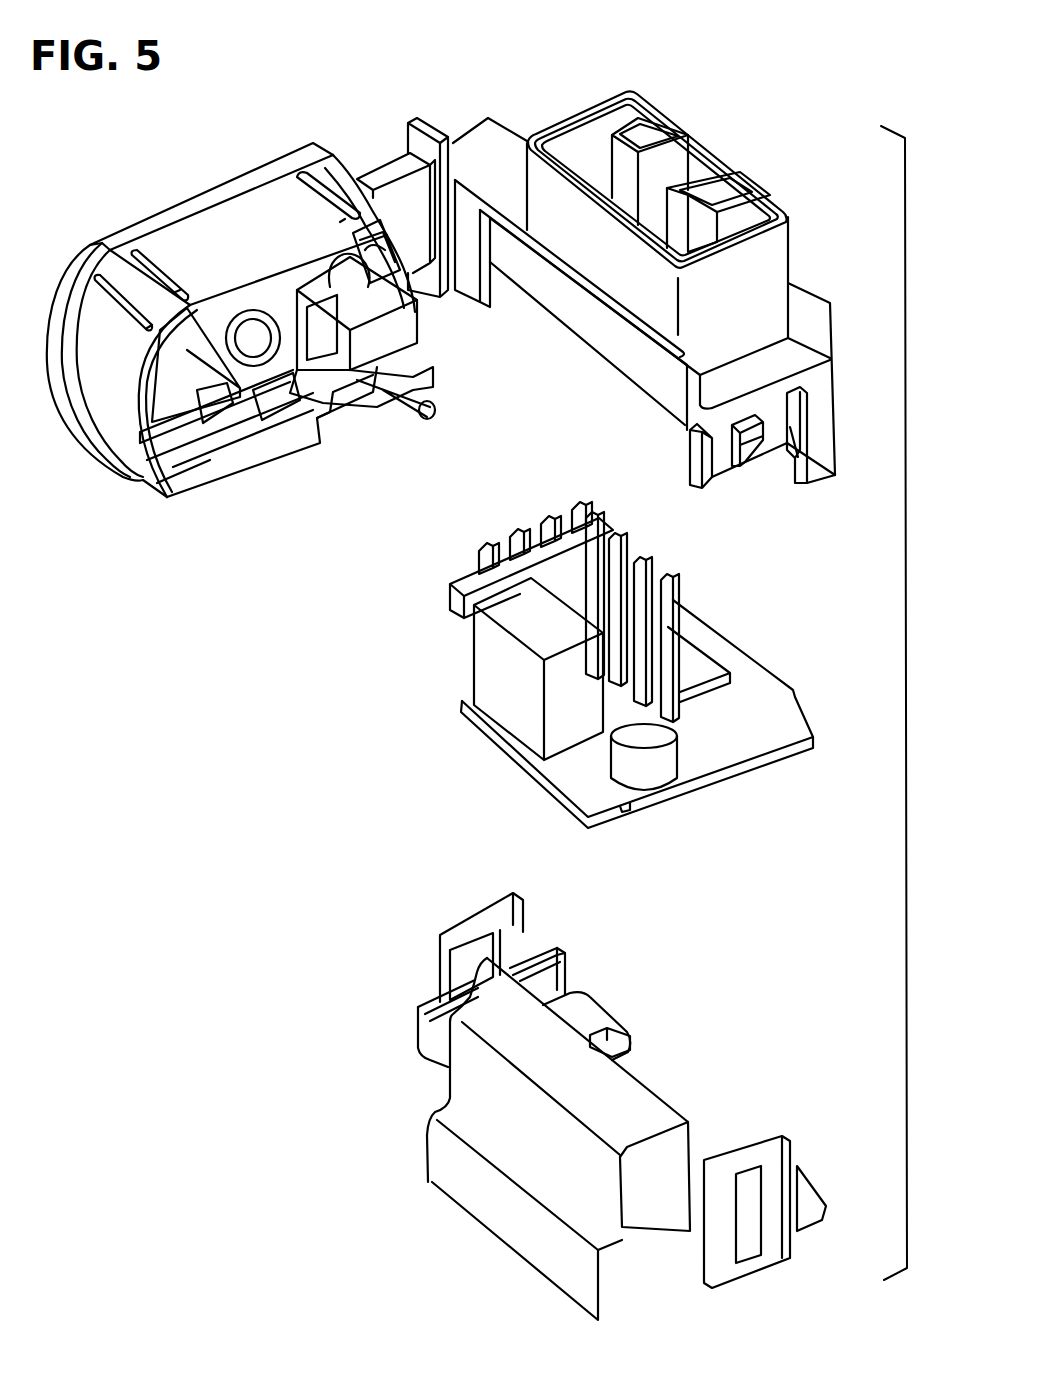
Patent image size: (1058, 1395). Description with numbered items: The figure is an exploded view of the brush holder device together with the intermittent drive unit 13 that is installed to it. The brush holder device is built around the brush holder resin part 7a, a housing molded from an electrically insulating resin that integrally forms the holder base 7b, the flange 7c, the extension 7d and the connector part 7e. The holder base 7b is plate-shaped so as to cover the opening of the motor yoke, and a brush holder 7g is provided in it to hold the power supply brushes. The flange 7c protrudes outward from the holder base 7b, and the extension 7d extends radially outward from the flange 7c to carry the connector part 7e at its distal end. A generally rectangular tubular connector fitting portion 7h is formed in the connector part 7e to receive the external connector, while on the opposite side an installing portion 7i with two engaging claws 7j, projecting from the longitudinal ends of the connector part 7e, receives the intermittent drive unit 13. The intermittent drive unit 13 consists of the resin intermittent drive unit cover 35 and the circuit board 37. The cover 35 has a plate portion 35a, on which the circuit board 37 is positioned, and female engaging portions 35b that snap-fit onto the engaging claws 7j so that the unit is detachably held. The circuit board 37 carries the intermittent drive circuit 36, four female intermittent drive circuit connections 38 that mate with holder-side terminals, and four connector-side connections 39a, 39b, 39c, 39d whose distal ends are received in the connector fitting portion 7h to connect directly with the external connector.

The brush holder resin part 7a is at (207, 237).
The holder base 7b is at (250, 290).
The flange 7c is at (340, 163).
The extension 7d is at (397, 187).
The connector part 7e is at (815, 302).
The brush holder 7g is at (388, 318).
The connector fitting portion 7h is at (748, 267).
The installing portion 7i is at (713, 473).
The engaging claws 7j is at (736, 440).
The intermittent drive unit 13 is at (392, 822).
The intermittent drive unit cover 35 is at (437, 920).
The plate portion 35a is at (697, 1092).
The female engaging portions 35b is at (489, 910).
The intermittent drive circuit 36 is at (709, 692).
The circuit board 37 is at (484, 756).
The intermittent drive circuit connections 38 is at (583, 500).
The connector-side connection 39a is at (678, 577).
The connector-side connection 39b is at (650, 560).
The connector-side connection 39c is at (616, 536).
The connector-side connection 39d is at (599, 514).